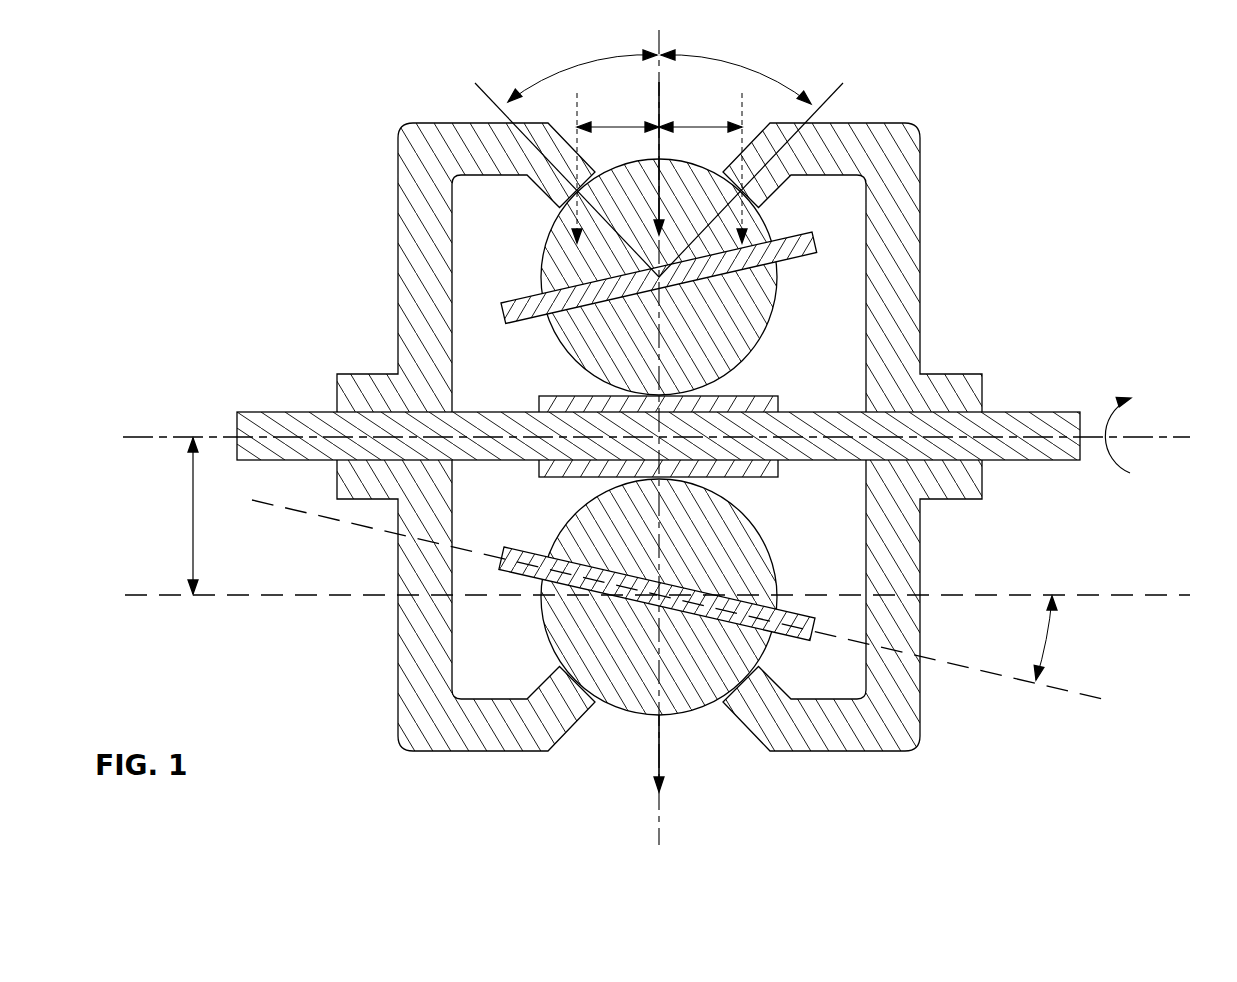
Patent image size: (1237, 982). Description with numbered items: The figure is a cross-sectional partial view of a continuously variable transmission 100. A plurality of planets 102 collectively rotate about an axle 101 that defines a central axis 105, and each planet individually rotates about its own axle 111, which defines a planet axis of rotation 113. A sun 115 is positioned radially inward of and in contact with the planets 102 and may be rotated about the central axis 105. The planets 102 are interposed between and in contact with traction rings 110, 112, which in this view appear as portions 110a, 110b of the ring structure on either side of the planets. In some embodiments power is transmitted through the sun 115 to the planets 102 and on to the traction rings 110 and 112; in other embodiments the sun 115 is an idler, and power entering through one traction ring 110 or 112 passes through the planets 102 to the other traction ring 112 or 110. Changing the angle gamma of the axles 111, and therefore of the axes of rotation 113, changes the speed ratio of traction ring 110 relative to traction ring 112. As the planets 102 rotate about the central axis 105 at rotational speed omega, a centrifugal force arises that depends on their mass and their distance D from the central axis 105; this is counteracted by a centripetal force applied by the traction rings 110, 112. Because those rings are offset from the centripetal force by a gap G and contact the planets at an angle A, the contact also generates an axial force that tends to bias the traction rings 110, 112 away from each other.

The continuously variable transmission 100 is at (677, 437).
The axle 101 is at (280, 412).
The planets 102 is at (777, 300).
The central axis 105 is at (1182, 437).
The traction ring 110 is at (654, 456).
The first housing portion 110a is at (398, 678).
The second housing portion 110b is at (921, 733).
The axles 111 is at (818, 238).
The traction ring 112 is at (880, 468).
The planet axes of rotation 113 is at (1098, 698).
The sun 115 is at (538, 462).